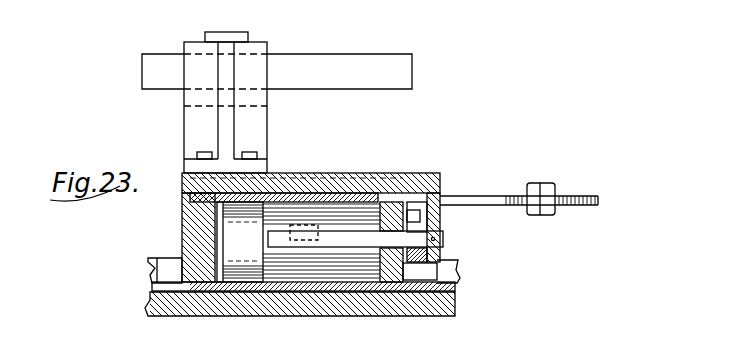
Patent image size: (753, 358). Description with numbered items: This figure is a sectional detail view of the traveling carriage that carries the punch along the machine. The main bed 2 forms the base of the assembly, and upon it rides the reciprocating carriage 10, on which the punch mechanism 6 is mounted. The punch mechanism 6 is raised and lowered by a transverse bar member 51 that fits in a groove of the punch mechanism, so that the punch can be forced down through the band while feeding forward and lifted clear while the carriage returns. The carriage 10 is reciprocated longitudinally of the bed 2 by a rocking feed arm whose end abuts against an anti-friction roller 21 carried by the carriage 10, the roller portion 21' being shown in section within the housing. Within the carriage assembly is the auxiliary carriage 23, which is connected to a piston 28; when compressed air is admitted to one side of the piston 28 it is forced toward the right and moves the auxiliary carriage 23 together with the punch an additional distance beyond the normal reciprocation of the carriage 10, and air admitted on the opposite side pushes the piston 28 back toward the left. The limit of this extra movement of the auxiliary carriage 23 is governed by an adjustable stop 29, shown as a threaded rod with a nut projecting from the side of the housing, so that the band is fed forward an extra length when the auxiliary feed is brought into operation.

The punch mechanism 6 is at (225, 91).
The transverse bar member 51 is at (323, 62).
The auxiliary carriage 23 is at (410, 181).
The anti-friction roller 21 is at (353, 212).
The rod portion 21' is at (326, 194).
The adjustable stop 29 is at (546, 215).
The reciprocating carriage 10 is at (208, 290).
The piston 28 is at (252, 283).
The bed 2 is at (340, 297).